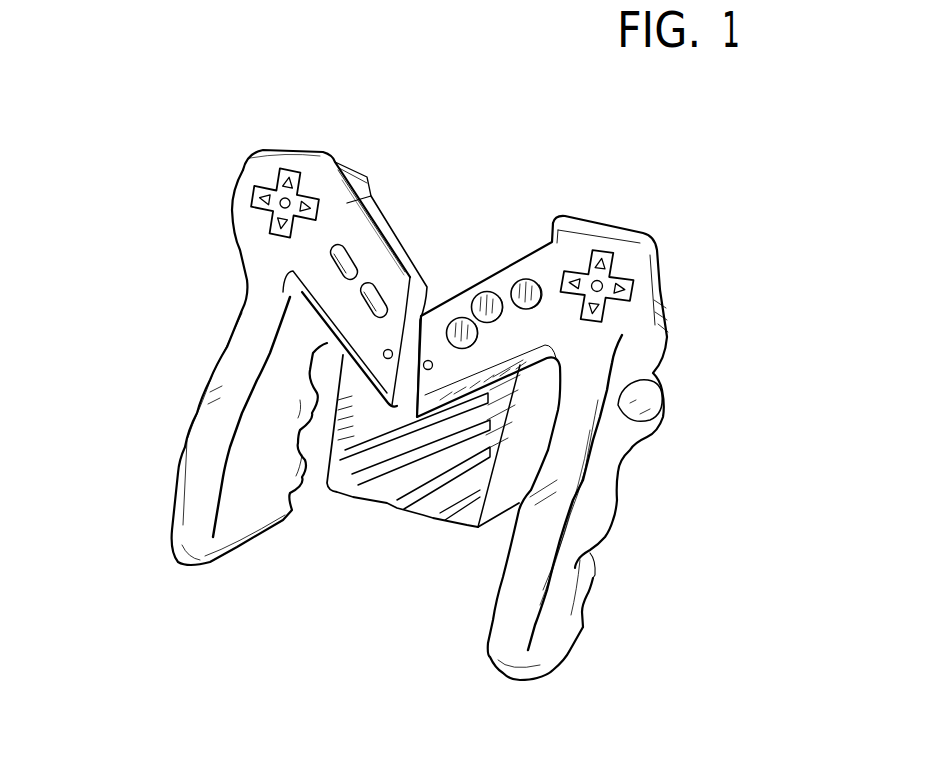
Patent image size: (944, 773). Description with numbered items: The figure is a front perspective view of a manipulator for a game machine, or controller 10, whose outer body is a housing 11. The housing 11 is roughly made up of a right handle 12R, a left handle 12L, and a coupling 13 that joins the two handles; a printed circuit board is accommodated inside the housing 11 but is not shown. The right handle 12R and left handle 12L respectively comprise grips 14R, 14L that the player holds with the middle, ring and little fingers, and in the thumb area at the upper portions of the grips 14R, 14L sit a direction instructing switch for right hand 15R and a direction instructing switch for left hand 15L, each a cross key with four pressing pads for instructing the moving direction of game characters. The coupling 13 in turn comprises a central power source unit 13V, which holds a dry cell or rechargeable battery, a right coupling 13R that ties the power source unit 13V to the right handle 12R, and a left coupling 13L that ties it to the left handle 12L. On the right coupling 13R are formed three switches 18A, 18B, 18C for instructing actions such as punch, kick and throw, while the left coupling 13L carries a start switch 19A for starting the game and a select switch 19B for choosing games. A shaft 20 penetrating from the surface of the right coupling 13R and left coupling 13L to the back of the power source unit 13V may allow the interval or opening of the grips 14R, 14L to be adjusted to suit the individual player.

The manipulator for a game machine 10 is at (232, 147).
The housing 11 is at (327, 180).
The coupling 13 is at (345, 237).
The left coupling 13L is at (373, 227).
The right coupling 13R is at (523, 327).
The power source unit 13V is at (353, 457).
The left handle 12L is at (260, 313).
The right handle 12R is at (568, 438).
The grip 14L is at (203, 457).
The grip 14R is at (525, 588).
The direction instructing switch for left hand 15L is at (263, 188).
The direction instructing switch for right hand 15R is at (620, 280).
The switch 18A is at (463, 322).
The switch 18B is at (487, 292).
The switch 18C is at (527, 279).
The start switch 19A is at (375, 297).
The select switch 19B is at (345, 262).
The shaft 20 is at (388, 359).